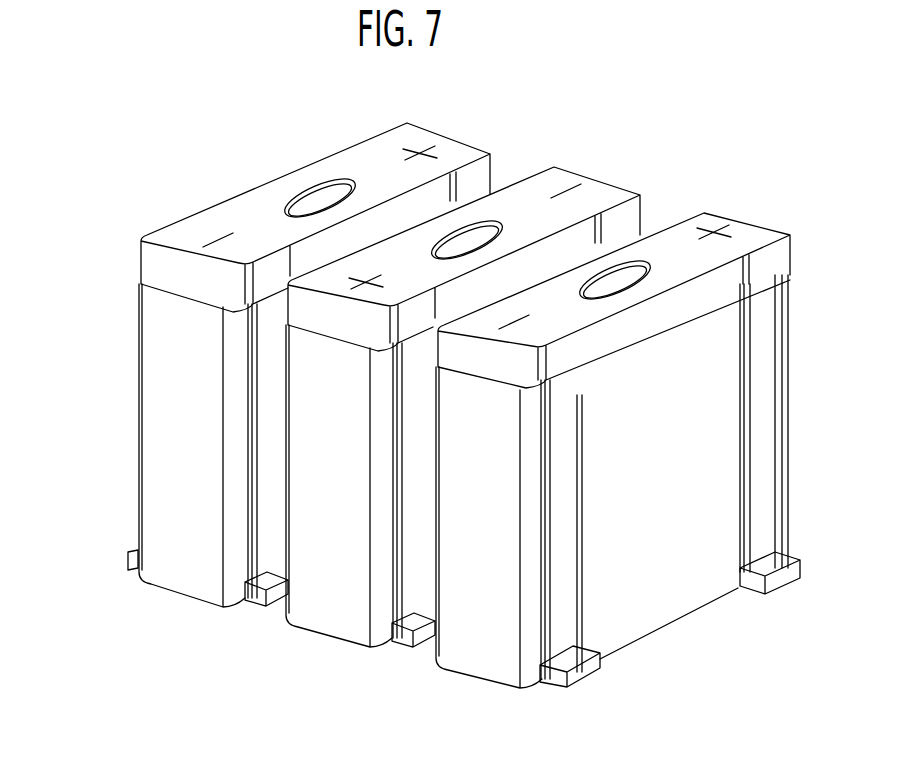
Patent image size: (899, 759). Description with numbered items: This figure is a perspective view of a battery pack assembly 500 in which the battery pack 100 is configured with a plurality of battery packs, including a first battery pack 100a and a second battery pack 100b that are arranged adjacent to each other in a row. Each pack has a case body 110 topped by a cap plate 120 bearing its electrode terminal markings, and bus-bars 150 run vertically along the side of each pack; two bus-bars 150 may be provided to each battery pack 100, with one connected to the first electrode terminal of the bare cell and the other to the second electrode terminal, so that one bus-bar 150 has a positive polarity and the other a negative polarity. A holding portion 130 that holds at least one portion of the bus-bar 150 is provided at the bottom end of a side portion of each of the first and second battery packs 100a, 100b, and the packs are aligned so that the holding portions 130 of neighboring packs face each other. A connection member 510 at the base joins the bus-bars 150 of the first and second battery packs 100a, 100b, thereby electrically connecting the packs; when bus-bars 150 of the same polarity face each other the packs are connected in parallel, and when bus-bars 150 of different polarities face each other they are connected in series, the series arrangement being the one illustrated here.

The battery pack 500 is at (724, 73).
The battery pack 100 is at (818, 142).
The first battery pack 100a is at (457, 125).
The second battery pack 100b is at (604, 157).
The cap plate 120 is at (220, 222).
The case / battery body 110 is at (163, 385).
The bus-bar 150 is at (268, 473).
The connection member 510 is at (265, 604).
The holding portion 130 is at (596, 682).